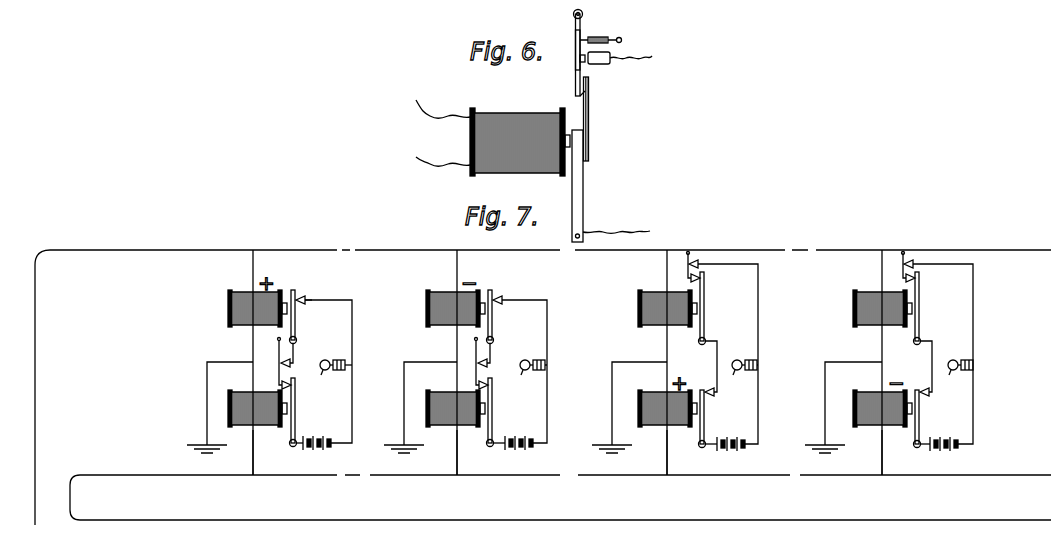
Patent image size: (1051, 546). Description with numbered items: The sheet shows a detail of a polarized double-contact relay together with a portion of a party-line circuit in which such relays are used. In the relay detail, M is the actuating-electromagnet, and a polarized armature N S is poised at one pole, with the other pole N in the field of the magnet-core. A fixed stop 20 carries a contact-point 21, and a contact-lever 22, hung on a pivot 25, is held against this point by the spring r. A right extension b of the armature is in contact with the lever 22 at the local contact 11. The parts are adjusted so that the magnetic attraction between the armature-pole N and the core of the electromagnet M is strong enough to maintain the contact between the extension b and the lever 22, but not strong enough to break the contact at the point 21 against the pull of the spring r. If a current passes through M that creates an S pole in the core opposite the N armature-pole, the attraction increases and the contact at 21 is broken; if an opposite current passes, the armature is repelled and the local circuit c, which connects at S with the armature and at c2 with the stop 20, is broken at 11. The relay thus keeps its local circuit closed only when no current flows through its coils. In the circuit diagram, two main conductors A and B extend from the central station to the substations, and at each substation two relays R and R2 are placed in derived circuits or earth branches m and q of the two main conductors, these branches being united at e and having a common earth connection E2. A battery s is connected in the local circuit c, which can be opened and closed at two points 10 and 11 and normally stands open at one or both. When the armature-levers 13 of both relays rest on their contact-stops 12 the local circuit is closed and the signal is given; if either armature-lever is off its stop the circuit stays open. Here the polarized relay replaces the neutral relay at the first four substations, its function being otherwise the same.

In FIG. 6, the pivot 25 is at (565, 51).
In FIG. 6, the contact-lever 22 is at (566, 50).
In FIG. 6, the contact-point 21 is at (578, 62).
In FIG. 6, the fixed stop 20 is at (608, 62).
In FIG. 6, the local contact 11 is at (583, 97).
In FIG. 7, the local contact 11 is at (279, 368).
In FIG. 7, the contact-stop 12 is at (310, 296).
In FIG. 7, the armature-lever 13 is at (296, 312).
In FIG. 7, the local circuit point 10 is at (302, 292).
In FIG. 6, the spring r is at (598, 36).
In FIG. 6, the local circuit connection to stop c2 is at (638, 48).
In FIG. 6, the extension b is at (593, 119).
In FIG. 6, the armature north pole N is at (577, 186).
In FIG. 6, the armature south pole S is at (578, 230).
In FIG. 6, the actuating-electromagnet M is at (493, 131).
In FIG. 6, the local circuit c is at (622, 222).
In FIG. 7, the local circuit c is at (639, 354).
In FIG. 6, the main conductor B is at (501, 14).
In FIG. 7, the main conductor B is at (560, 497).
In FIG. 7, the main conductor A is at (543, 375).
In FIG. 7, the derived circuit m is at (252, 262).
In FIG. 7, the relay R is at (556, 308).
In FIG. 7, the relay R2 is at (559, 408).
In FIG. 7, the battery s is at (628, 436).
In FIG. 7, the junction of branches e is at (251, 360).
In FIG. 7, the earth connection E2 is at (512, 439).
In FIG. 7, the derived circuit q is at (255, 447).